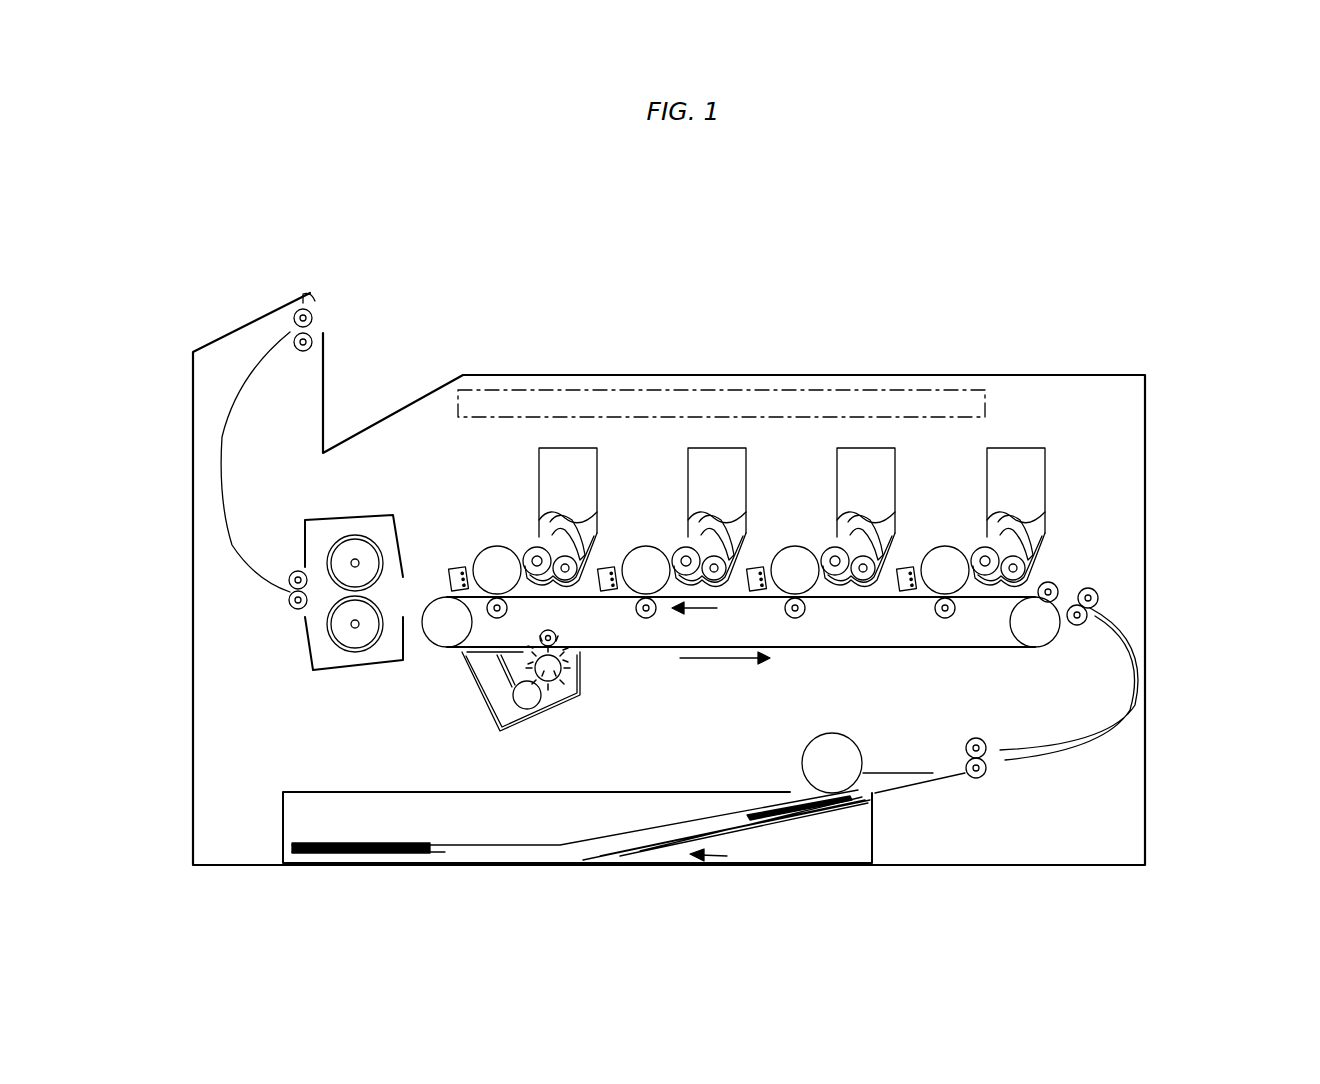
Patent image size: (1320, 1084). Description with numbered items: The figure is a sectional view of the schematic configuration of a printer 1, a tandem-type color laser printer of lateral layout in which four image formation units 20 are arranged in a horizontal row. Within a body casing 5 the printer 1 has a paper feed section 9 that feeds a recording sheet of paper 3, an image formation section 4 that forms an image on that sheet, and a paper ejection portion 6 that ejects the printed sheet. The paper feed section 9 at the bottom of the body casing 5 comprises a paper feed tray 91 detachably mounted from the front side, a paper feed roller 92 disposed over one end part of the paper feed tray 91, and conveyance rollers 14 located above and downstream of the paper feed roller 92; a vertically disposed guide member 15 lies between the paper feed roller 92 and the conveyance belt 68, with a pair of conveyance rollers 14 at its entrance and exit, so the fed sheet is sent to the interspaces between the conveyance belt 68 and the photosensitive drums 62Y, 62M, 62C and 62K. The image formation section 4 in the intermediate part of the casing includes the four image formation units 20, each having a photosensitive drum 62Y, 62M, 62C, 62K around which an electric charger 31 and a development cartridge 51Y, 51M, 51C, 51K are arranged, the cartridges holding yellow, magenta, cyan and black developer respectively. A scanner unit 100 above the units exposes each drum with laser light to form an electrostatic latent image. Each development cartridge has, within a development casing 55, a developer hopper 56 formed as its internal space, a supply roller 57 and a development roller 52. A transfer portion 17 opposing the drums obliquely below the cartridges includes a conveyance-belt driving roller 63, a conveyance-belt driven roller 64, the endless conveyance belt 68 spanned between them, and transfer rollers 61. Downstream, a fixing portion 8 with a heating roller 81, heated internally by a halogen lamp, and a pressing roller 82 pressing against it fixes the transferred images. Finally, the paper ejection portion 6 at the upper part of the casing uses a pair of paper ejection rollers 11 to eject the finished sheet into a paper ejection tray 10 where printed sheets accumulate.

The printer 1 is at (958, 237).
The recording sheet of paper 3 is at (567, 847).
The image formation section 4 is at (1103, 452).
The body casing 5 is at (1146, 592).
The paper ejection portion 6 is at (338, 404).
The fixing portion 8 is at (305, 528).
The paper feed section 9 is at (712, 857).
The paper ejection tray 10 is at (343, 440).
The paper ejection rollers 11 is at (303, 297).
The conveyance rollers 14 is at (1093, 588).
The guide member 15 is at (1132, 670).
The transfer portion 17 is at (825, 610).
The image formation unit 20 is at (1035, 316).
The electric charger 31 is at (455, 568).
The development cartridge 51K is at (580, 447).
The development cartridge 51C is at (725, 449).
The development cartridge 51M is at (870, 449).
The development cartridge 51Y is at (1012, 449).
The development roller 52 is at (535, 549).
The development casing 55 is at (562, 447).
The developer hopper 56 is at (573, 527).
The supply roller 57 is at (595, 557).
The transfer rollers 61 is at (955, 612).
The photosensitive drum 62K is at (493, 560).
The photosensitive drum 62C is at (647, 562).
The photosensitive drum 62M is at (795, 555).
The photosensitive drum 62Y is at (943, 555).
The conveyance-belt driving roller 63 is at (442, 636).
The conveyance-belt driven roller 64 is at (1040, 640).
The conveyance belt 68 is at (875, 648).
The heating roller 81 is at (340, 562).
The pressing roller 82 is at (363, 608).
The paper feed tray 91 is at (872, 843).
The paper feed roller 92 is at (847, 773).
The scanner unit 100 is at (514, 390).